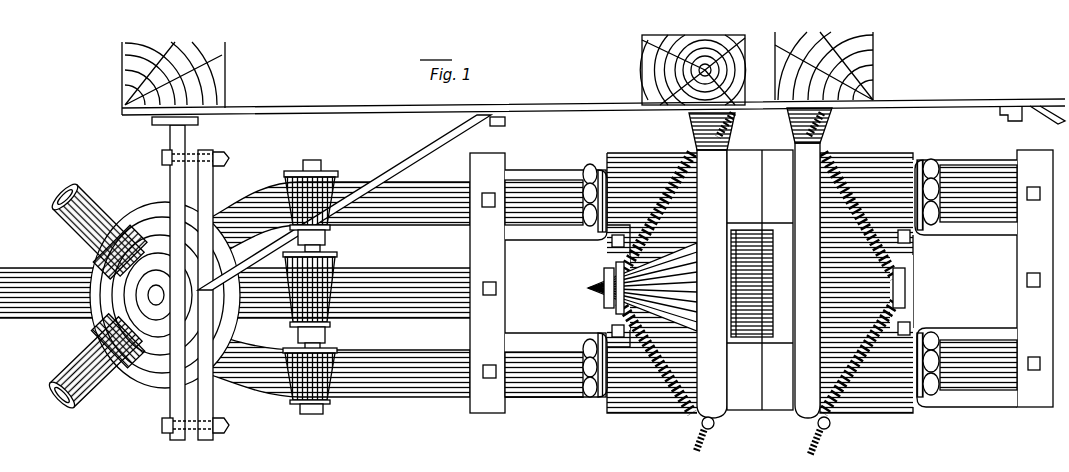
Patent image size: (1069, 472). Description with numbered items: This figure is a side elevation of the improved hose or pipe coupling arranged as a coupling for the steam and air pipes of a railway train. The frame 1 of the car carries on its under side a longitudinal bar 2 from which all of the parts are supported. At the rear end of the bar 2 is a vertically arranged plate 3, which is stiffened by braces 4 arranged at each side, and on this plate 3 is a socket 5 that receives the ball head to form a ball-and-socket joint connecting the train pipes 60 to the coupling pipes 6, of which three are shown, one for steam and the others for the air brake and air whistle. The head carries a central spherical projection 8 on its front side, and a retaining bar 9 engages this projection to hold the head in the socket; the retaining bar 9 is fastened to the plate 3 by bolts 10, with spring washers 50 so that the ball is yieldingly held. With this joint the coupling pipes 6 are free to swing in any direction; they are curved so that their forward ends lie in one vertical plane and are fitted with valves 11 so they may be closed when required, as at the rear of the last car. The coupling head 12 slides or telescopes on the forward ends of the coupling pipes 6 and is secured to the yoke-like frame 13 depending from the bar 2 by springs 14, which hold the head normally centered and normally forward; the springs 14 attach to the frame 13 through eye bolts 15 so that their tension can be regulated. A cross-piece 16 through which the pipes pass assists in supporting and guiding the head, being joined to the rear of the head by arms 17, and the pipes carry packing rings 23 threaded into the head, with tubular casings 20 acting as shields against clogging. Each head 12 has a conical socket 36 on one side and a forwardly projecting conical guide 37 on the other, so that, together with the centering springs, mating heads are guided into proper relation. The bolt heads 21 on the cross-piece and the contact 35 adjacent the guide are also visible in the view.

The frame 1 is at (497, 57).
The longitudinal bar 2 is at (190, 135).
The vertically arranged plate 3 is at (170, 178).
The braces 4 is at (237, 183).
The socket 5 is at (97, 255).
The coupling pipes 6 is at (452, 222).
The spherical projection 8 is at (186, 278).
The retaining bar 9 is at (212, 398).
The bolts 10 is at (193, 150).
The valves 11 is at (322, 160).
The coupling head 12 is at (637, 153).
The yoke-like frame 13 is at (729, 152).
The springs 14 is at (680, 160).
The eye bolts 15 is at (735, 122).
The cross-piece 16 is at (497, 411).
The arms 17 is at (590, 313).
The tubular casings 20 is at (546, 397).
The bolt 21 is at (485, 378).
The packing rings 23 is at (592, 398).
The contact 35 is at (606, 288).
The conical socket 36 is at (642, 292).
The conical guide 37 is at (773, 338).
The spring washers 50 is at (225, 152).
The train pipes 60 is at (235, 274).